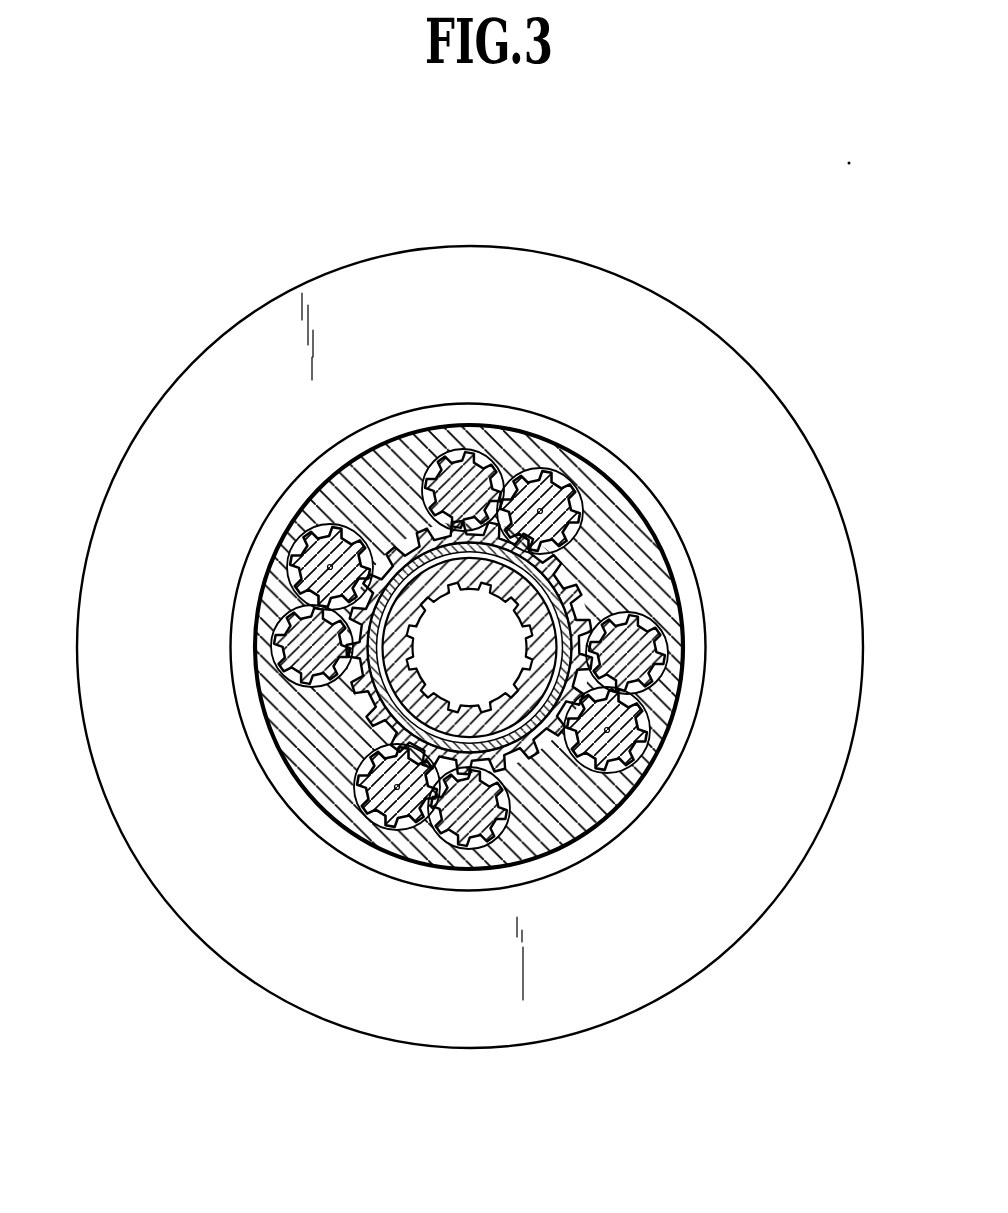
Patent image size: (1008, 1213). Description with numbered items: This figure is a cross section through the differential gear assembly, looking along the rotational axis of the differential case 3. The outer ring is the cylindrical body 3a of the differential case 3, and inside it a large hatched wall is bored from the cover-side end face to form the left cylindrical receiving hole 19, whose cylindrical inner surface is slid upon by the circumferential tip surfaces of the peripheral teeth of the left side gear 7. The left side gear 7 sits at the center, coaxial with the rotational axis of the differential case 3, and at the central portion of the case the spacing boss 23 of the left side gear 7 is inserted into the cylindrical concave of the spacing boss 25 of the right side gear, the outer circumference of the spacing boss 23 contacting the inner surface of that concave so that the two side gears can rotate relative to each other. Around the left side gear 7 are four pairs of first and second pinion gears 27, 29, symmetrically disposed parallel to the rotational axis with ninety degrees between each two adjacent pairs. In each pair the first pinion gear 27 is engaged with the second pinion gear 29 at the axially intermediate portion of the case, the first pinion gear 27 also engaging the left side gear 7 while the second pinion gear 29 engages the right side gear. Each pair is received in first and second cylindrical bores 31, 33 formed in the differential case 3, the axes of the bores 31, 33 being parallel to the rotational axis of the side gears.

The differential case 3 is at (688, 292).
The cylindrical body 3a is at (372, 456).
The left side gear 7 is at (548, 745).
The left cylindrical receiving hole 19 is at (546, 780).
The spacing boss 23 is at (540, 612).
The spacing boss 25 is at (538, 576).
The first pinion gear 27 is at (557, 478).
The second pinion gear 29 is at (460, 467).
The first cylindrical bore 31 is at (553, 492).
The second cylindrical bore 33 is at (495, 478).